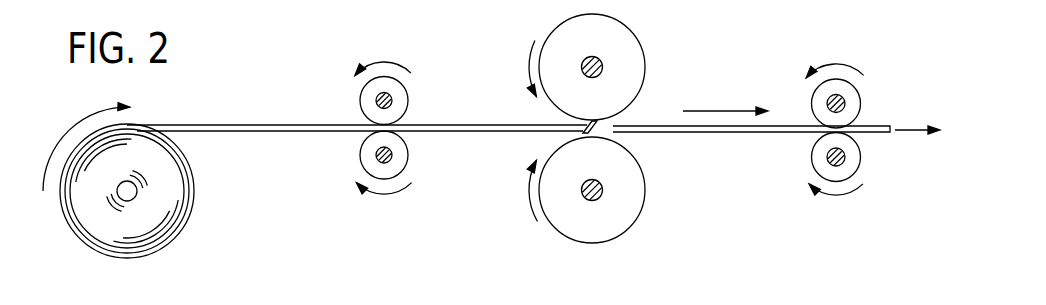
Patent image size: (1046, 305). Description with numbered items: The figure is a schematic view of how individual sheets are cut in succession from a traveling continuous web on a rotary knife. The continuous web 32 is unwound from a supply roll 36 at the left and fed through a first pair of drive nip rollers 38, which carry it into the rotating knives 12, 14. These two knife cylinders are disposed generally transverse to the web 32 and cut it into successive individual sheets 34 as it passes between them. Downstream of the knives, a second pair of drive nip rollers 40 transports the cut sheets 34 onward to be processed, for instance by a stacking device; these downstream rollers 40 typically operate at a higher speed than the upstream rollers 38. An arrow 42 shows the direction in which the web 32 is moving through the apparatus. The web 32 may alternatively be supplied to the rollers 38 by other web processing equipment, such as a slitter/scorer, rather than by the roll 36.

The rotating knife 12 is at (605, 20).
The rotating knife 14 is at (635, 200).
The web 32 is at (217, 127).
The sheets 34 is at (712, 135).
The supply roll 36 is at (173, 233).
The drive nip rollers 38 is at (397, 60).
The drive nip rollers 40 is at (868, 92).
The arrow 42 is at (720, 108).